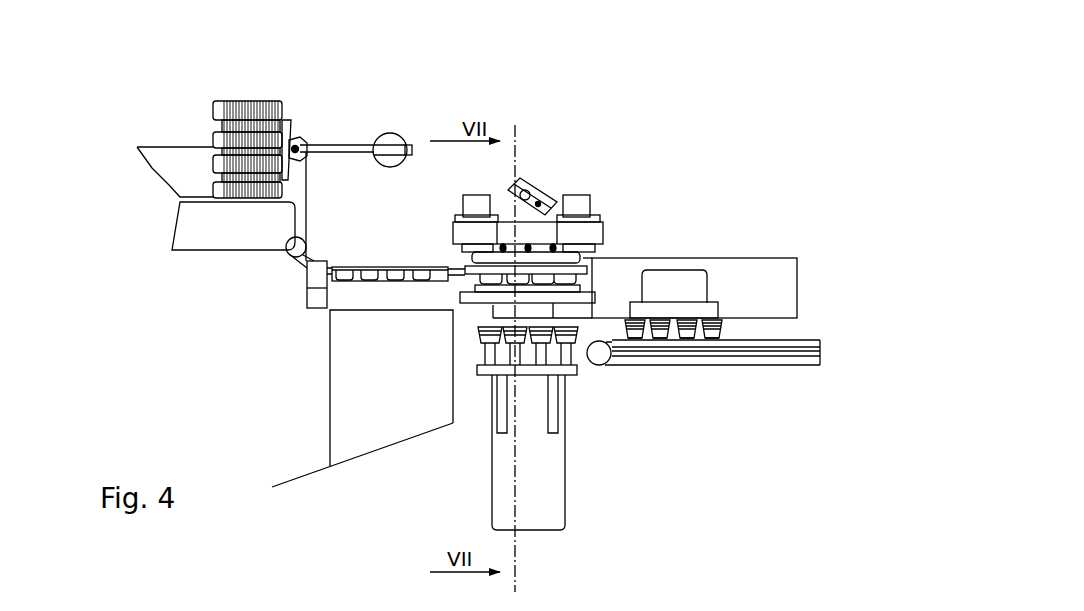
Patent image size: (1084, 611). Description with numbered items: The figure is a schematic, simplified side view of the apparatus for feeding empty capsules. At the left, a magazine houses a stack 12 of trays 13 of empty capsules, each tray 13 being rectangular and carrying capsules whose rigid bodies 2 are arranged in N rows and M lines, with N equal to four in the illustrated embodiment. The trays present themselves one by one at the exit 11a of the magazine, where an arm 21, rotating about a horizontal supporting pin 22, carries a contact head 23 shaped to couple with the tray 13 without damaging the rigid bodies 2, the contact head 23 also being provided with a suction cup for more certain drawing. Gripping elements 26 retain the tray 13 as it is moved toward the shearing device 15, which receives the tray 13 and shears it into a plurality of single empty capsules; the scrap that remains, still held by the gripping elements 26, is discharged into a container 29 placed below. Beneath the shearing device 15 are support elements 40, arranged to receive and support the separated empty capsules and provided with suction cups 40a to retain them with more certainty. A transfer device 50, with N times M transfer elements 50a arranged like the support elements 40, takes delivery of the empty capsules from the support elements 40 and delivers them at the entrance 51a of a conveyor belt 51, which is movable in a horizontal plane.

The number of rows N is at (195, 137).
The stack 12 is at (245, 83).
The contact head 23 is at (283, 120).
The exit 11a is at (303, 110).
The arm 21 is at (341, 147).
The supporting pin 22 is at (405, 134).
The shearing device 15 is at (536, 158).
The tray 13 is at (378, 265).
The gripping elements 26 is at (329, 262).
The transfer device 50 is at (684, 240).
The transfer elements 50a is at (721, 318).
The rigid body 2 is at (713, 340).
The conveyor belt 51 is at (748, 364).
The entrance 51a is at (665, 385).
The support elements 40 is at (570, 354).
The suction cups 40a is at (487, 352).
The container 29 is at (378, 432).